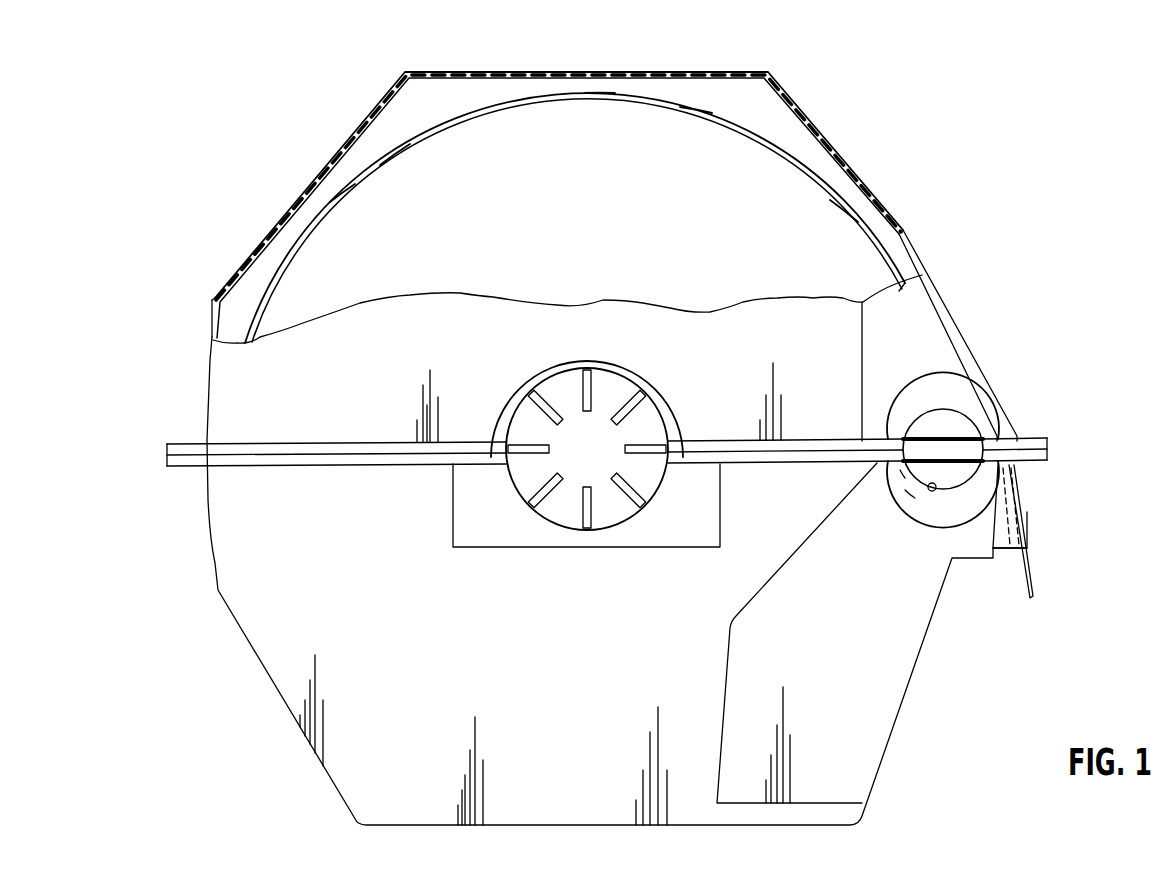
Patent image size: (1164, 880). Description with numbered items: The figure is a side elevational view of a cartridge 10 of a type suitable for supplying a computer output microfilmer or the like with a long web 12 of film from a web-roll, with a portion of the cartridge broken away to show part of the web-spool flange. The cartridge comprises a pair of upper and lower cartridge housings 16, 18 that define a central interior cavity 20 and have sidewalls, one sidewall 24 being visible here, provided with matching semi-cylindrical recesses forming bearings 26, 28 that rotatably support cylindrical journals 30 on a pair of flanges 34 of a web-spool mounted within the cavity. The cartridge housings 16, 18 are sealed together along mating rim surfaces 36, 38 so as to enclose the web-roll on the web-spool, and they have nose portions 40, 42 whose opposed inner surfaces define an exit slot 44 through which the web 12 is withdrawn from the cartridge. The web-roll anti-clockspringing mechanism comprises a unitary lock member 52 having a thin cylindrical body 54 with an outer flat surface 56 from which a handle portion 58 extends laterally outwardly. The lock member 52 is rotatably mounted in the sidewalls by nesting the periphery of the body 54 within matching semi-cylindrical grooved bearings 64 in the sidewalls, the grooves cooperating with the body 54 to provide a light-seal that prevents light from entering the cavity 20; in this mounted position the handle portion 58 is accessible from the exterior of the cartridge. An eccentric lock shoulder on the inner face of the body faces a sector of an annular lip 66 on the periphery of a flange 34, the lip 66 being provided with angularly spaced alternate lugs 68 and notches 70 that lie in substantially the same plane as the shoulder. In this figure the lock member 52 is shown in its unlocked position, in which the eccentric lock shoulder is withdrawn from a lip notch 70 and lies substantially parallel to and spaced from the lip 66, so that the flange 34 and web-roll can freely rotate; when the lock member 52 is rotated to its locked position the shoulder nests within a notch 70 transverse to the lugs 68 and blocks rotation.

The cartridge 10 is at (1032, 209).
The web 12 is at (1035, 577).
The upper cartridge housing 16 is at (331, 394).
The lower cartridge housing 18 is at (402, 547).
The central interior cavity 20 is at (868, 187).
The sidewall 24 is at (284, 657).
The bearing 26 is at (626, 378).
The bearing 28 is at (614, 516).
The cylindrical journal 30 is at (653, 430).
The flange 34 is at (279, 309).
The mating rim surface 36 is at (368, 441).
The mating rim surface 38 is at (343, 457).
The nose portion 40 is at (1024, 516).
The nose portion 42 is at (1003, 548).
The exit slot 44 is at (1021, 533).
The lock member 52 is at (910, 500).
The cylindrical body 54 is at (918, 428).
The outer flat surface 56 is at (921, 471).
The handle portion 58 is at (917, 448).
The grooved bearing 64 is at (932, 492).
The annular lip 66 is at (489, 118).
The lug 68 is at (394, 158).
The notch 70 is at (342, 194).